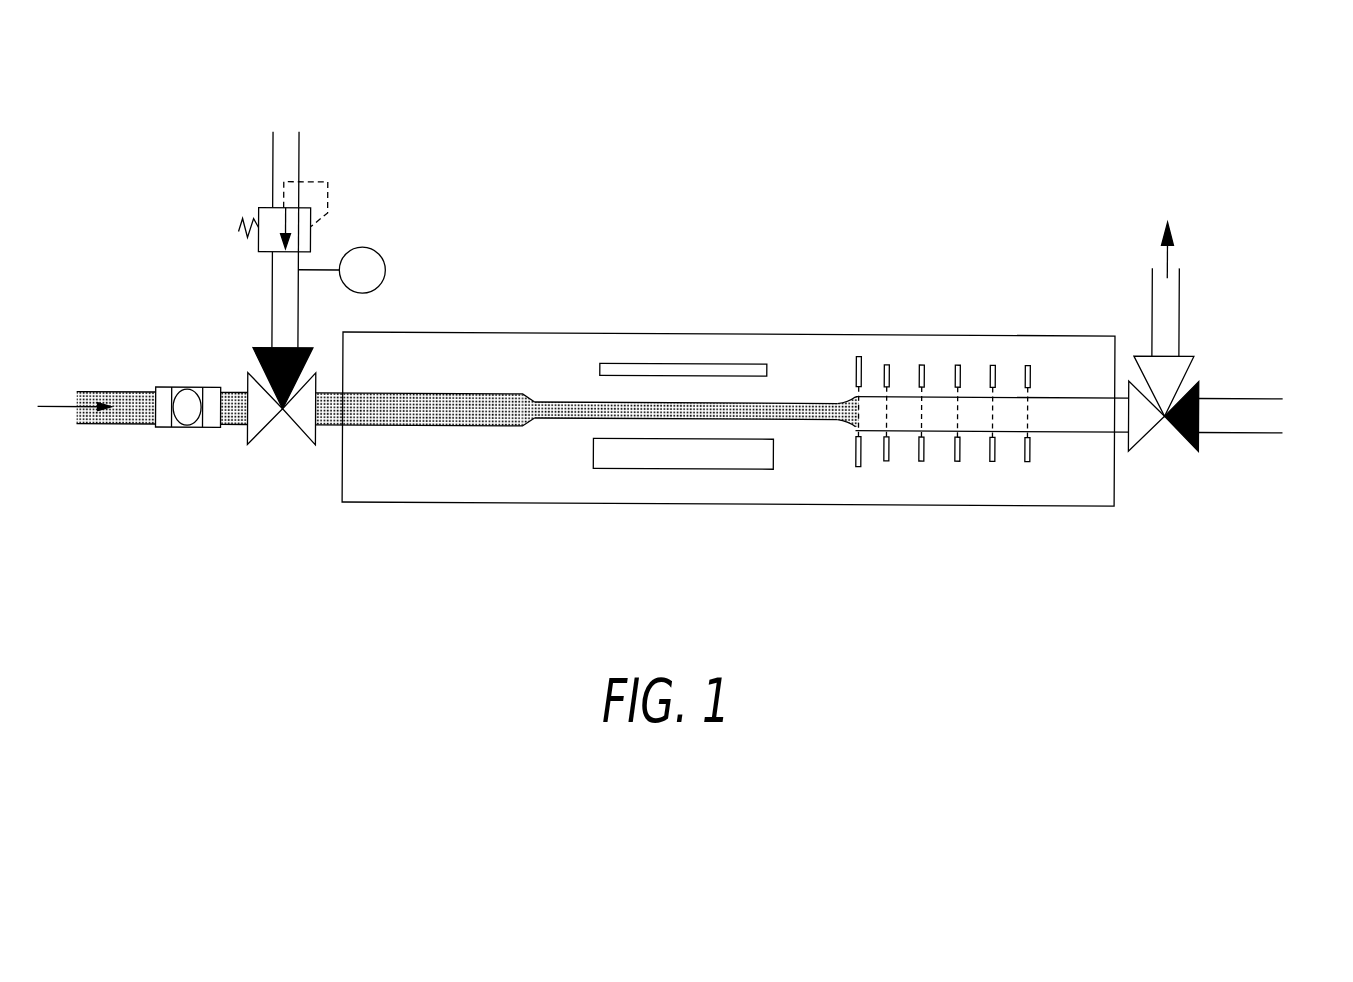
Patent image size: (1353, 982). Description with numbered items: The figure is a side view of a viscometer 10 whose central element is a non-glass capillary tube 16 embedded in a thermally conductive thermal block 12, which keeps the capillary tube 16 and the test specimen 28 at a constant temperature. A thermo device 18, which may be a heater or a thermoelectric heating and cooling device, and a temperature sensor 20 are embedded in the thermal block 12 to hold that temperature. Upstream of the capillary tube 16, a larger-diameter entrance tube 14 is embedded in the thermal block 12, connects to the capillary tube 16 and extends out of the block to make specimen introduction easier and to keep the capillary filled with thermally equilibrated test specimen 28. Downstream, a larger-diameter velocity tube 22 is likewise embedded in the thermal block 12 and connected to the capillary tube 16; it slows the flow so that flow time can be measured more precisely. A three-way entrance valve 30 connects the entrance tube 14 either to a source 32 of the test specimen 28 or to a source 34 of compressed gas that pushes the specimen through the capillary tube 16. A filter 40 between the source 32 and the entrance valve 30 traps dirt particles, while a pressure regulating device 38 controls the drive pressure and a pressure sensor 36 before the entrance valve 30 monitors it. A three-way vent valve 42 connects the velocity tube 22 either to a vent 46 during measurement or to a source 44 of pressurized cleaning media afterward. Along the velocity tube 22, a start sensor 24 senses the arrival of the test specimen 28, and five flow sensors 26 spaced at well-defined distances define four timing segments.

The viscometer 10 is at (647, 568).
The thermal block 12 is at (555, 331).
The entrance tube 14 is at (430, 393).
The capillary tube 16 is at (797, 401).
The thermo device 18 is at (750, 467).
The temperature sensor 20 is at (718, 362).
The velocity tube 22 is at (1060, 430).
The start sensor 24 is at (856, 354).
The flow sensors 26 is at (887, 362).
The test specimen 28 is at (478, 412).
The entrance valve 30 is at (283, 413).
The source of the test specimen 32 is at (122, 426).
The source of compressed gas 34 is at (298, 149).
The pressure sensor 36 is at (385, 268).
The pressure regulating device 38 is at (310, 245).
The filter 40 is at (188, 428).
The vent valve 42 is at (1163, 415).
The source of pressurized cleaning media 44 is at (1262, 406).
The vent 46 is at (1179, 301).